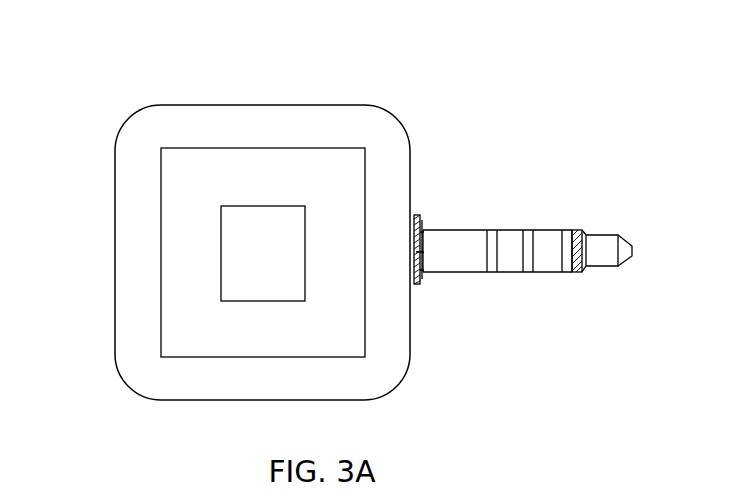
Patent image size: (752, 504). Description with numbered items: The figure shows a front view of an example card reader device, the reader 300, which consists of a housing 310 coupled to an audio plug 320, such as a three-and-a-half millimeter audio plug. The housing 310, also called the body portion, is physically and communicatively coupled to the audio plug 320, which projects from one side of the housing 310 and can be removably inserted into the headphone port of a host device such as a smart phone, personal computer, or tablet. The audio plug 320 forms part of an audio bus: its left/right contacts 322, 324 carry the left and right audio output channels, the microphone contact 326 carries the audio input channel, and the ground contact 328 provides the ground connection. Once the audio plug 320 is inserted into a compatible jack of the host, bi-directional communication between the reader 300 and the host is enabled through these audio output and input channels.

The reader 300 is at (118, 77).
The housing 310 is at (145, 395).
The audio plug 320 is at (423, 167).
The left/right contact 322 is at (610, 252).
The left/right contact 324 is at (548, 242).
The microphone contact 326 is at (455, 258).
The ground contact 328 is at (513, 268).